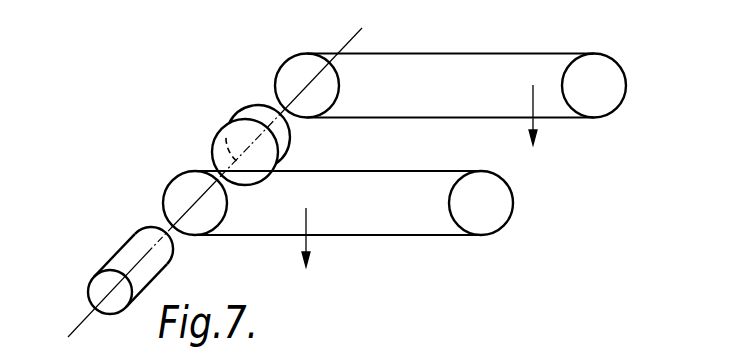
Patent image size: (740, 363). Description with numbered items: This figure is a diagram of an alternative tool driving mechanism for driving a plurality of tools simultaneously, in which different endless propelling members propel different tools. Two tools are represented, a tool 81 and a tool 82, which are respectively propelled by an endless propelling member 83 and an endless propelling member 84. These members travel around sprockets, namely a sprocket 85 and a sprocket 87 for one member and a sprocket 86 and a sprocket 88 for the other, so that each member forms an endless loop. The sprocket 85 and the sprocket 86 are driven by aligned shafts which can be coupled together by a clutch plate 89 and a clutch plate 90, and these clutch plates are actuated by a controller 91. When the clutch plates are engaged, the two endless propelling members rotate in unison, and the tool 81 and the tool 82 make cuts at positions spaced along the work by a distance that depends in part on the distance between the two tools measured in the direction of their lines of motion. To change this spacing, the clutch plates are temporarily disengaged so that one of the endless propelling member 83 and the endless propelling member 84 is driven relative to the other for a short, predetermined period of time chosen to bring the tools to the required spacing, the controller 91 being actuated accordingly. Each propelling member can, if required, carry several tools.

The tool 81 is at (310, 258).
The tool 82 is at (538, 133).
The endless propelling member 83 is at (418, 235).
The endless propelling member 84 is at (453, 54).
The sprocket 85 is at (170, 183).
The sprocket 86 is at (297, 58).
The sprocket 87 is at (515, 202).
The sprocket 88 is at (618, 62).
The clutch plate 89 is at (217, 138).
The clutch plate 90 is at (252, 107).
The controller 91 is at (115, 252).